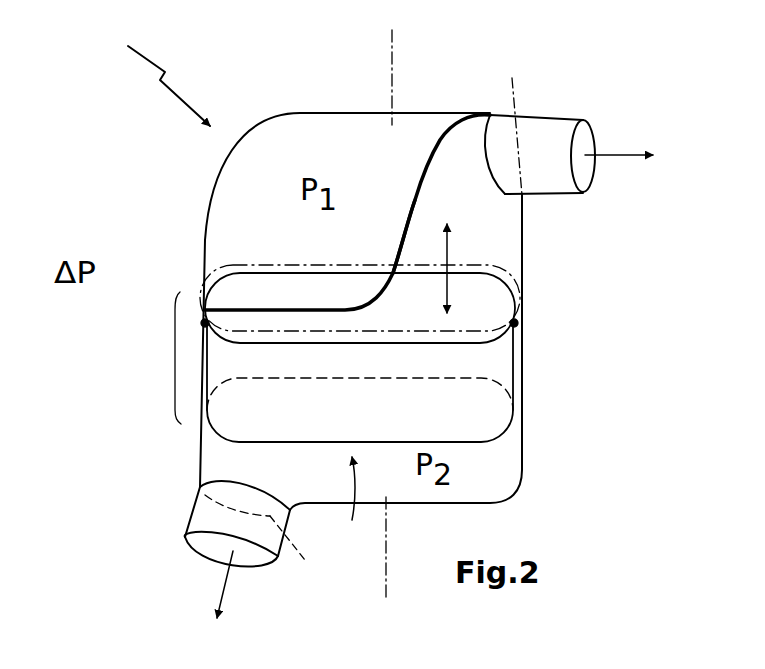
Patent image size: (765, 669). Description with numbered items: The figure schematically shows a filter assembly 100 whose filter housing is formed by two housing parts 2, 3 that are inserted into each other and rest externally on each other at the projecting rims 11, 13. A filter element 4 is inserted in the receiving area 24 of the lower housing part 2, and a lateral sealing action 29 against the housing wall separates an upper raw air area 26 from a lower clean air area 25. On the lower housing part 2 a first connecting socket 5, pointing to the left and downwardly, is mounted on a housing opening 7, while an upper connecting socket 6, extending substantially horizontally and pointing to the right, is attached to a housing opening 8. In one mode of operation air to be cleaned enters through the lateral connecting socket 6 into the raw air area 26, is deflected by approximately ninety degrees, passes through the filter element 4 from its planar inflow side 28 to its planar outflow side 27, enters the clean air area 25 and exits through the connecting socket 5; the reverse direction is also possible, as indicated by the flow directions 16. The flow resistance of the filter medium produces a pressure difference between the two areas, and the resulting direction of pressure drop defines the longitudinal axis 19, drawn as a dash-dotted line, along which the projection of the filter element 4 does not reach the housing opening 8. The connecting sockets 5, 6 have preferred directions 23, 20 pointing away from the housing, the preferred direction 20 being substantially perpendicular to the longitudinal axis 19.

The filter assembly 100 is at (157, 67).
The lower housing part 2 is at (505, 476).
The upper housing part 3 is at (218, 180).
The filter element 4 is at (500, 373).
The first connecting socket 5 is at (205, 516).
The upper connecting socket 6 is at (560, 126).
The housing opening 7 is at (296, 551).
The housing opening 8 is at (547, 72).
The projecting rim 11 is at (428, 160).
The projecting rim 13 is at (418, 185).
The flow direction 16 is at (452, 248).
The longitudinal axis 19 is at (396, 70).
The preferred direction 20 is at (650, 98).
The preferred direction 23 is at (225, 576).
The receiving area 24 is at (175, 358).
The clean air area 25 is at (539, 415).
The raw air area 26 is at (532, 252).
The outflow side 27 is at (348, 504).
The inflow side 28 is at (297, 298).
The sealing action 29 is at (200, 323).